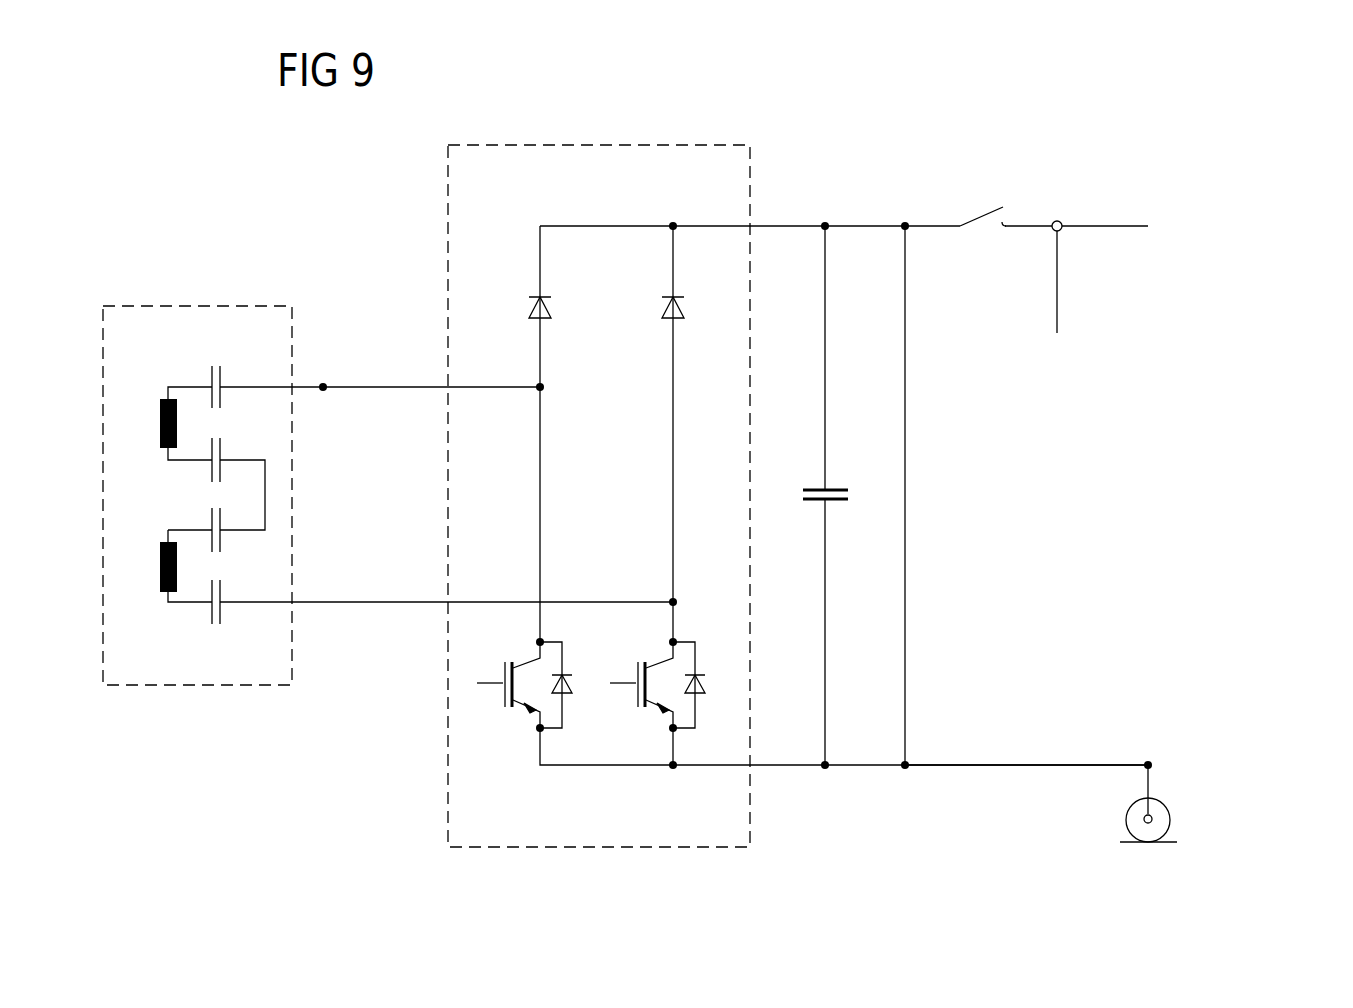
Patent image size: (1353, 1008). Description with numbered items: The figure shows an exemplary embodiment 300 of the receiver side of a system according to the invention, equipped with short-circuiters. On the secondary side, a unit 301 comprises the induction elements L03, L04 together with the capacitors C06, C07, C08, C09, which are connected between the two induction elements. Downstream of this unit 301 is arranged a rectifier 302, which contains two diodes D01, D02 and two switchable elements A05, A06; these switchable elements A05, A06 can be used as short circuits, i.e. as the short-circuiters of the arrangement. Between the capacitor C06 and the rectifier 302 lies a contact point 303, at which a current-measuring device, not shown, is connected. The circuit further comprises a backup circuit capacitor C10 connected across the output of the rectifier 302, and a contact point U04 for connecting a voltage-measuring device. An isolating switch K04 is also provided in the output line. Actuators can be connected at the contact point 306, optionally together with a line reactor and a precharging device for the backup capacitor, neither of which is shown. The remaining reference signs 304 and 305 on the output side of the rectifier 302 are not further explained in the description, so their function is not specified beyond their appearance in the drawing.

The exemplary embodiment of the receiver side 300 is at (1242, 197).
The unit 301 is at (197, 685).
The rectifier 302 is at (448, 172).
The contact point 303 is at (325, 382).
The line 304 is at (1015, 765).
The earth 305 is at (1170, 805).
The contact point 306 is at (1057, 220).
The isolating switch K04 is at (978, 215).
The contact point U04 is at (935, 385).
The backup circuit capacitor C10 is at (815, 488).
The diode D01 is at (525, 308).
The diode D02 is at (660, 308).
The switchable element A05 is at (503, 668).
The switchable element A06 is at (636, 668).
The induction element L03 is at (160, 417).
The induction element L04 is at (160, 575).
The capacitor C06 is at (220, 378).
The capacitor C07 is at (220, 453).
The capacitor C08 is at (220, 541).
The capacitor C09 is at (220, 613).